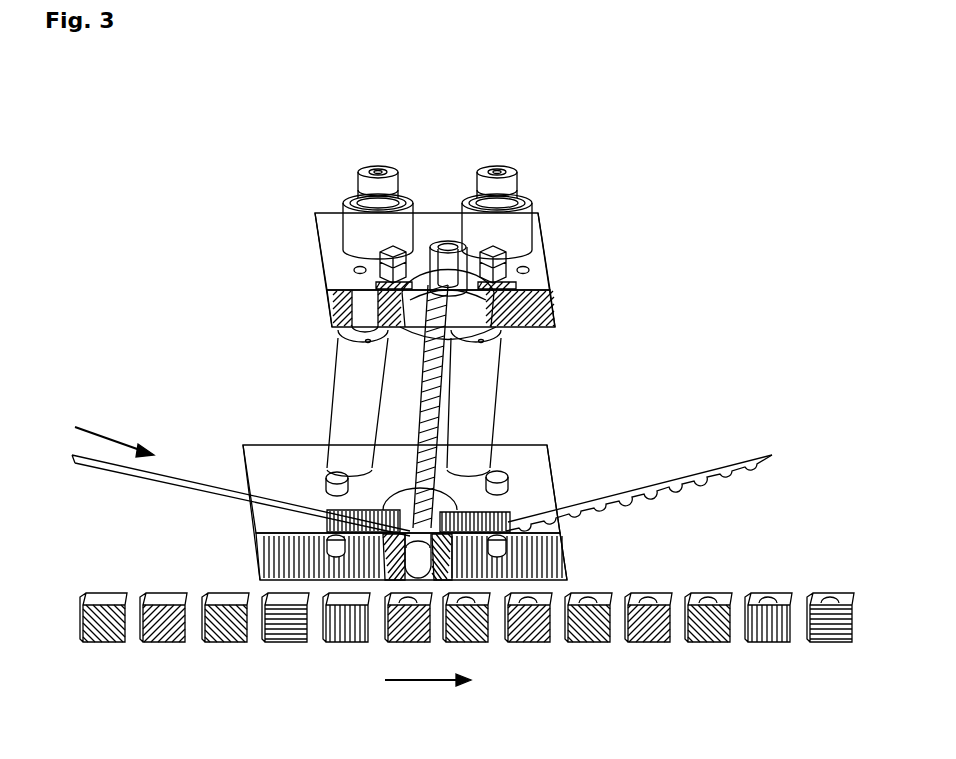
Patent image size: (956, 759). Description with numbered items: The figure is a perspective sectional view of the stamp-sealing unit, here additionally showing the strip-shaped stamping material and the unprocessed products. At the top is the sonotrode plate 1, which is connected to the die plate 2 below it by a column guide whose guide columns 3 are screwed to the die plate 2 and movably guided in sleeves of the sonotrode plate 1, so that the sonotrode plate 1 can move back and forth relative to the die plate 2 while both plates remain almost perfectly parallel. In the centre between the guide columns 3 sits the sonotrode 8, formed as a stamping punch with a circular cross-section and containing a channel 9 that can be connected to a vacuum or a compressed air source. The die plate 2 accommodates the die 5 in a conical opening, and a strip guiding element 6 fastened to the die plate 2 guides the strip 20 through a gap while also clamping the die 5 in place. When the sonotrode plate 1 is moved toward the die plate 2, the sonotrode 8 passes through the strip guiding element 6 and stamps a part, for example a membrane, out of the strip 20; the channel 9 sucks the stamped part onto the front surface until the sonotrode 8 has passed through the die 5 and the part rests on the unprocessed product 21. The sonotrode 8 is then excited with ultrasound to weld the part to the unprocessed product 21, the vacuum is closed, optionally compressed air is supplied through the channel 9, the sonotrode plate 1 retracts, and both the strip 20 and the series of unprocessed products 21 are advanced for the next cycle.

The sonotrode plate 1 is at (315, 245).
The die plate 2 is at (245, 482).
The guide columns 3 is at (497, 178).
The die 5 is at (445, 550).
The strip guiding element 6 is at (327, 508).
The sonotrode 8 is at (467, 312).
The channel 9 is at (443, 473).
The strip 20 is at (157, 482).
The unprocessed product 21 is at (97, 637).